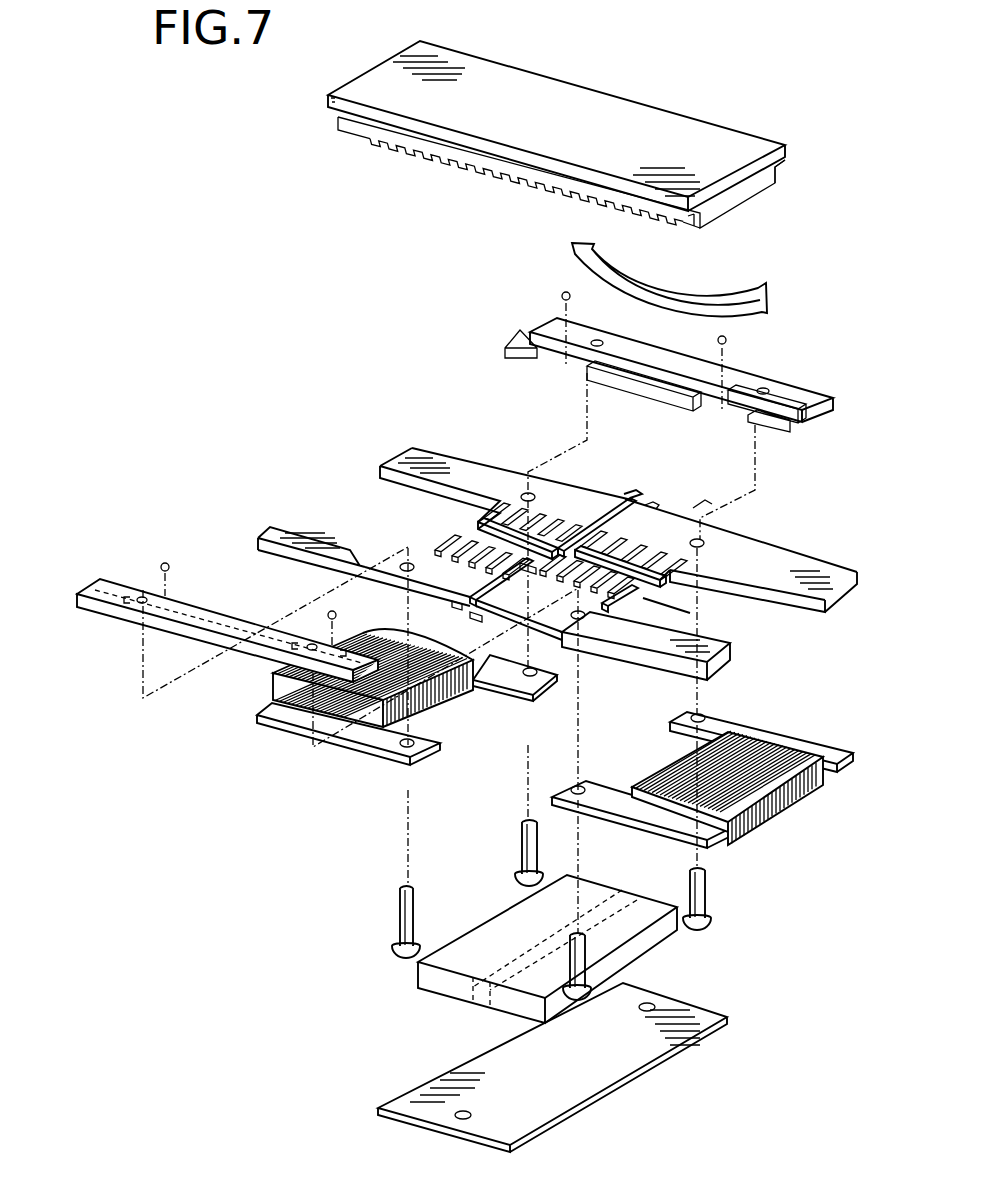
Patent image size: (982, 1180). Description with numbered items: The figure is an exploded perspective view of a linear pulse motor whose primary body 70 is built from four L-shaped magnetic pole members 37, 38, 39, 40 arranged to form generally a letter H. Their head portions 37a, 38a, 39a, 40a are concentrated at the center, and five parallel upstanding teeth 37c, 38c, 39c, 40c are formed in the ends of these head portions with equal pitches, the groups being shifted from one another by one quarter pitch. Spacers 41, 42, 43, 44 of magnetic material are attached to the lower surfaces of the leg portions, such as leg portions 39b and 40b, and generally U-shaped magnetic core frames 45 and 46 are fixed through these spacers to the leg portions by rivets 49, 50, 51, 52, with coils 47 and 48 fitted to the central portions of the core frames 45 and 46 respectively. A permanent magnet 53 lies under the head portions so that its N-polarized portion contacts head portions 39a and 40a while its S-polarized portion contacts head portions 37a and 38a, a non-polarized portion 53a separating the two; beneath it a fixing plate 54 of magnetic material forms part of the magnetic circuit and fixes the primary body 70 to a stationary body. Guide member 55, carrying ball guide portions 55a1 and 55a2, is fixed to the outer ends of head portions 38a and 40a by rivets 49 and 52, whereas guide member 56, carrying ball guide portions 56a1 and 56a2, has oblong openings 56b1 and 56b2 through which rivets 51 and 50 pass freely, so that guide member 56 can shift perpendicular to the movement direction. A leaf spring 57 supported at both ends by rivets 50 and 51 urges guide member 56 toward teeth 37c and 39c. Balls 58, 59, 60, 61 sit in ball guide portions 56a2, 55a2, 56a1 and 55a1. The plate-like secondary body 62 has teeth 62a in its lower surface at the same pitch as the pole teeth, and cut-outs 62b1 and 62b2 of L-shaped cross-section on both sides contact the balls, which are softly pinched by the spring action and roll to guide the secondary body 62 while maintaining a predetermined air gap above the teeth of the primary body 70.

The magnetic pole member 37 is at (745, 553).
The head portion 37a is at (660, 530).
The teeth 37c is at (660, 586).
The magnetic pole member 38 is at (603, 623).
The head portion 38a is at (530, 578).
The teeth 38c is at (630, 613).
The magnetic pole member 39 is at (513, 488).
The head portion 39a is at (580, 508).
The leg portion 39b is at (436, 470).
The teeth 39c is at (543, 530).
The magnetic pole member 40 is at (417, 584).
The head portion 40a is at (417, 557).
The leg portion 40b is at (310, 540).
The teeth 40c is at (450, 531).
The spacer 41 is at (810, 601).
The spacer 42 is at (735, 663).
The spacer 43 is at (386, 483).
The spacer 44 is at (272, 558).
The magnetic core frame 45 is at (800, 747).
The magnetic core frame 46 is at (297, 710).
The coil 47 is at (770, 803).
The coil 48 is at (430, 703).
The rivet 49 is at (587, 957).
The rivet 50 is at (706, 890).
The rivet 51 is at (527, 847).
The rivet 52 is at (407, 907).
The permanent magnet 53 is at (457, 983).
The non-polarized portion 53a is at (480, 998).
The fixing plate 54 is at (593, 1072).
The guide member 55 is at (132, 613).
The ball guide portion 55a1 is at (175, 597).
The ball guide portion 55a2 is at (300, 663).
The guide member 56 is at (663, 372).
The ball guide portion 56a1 is at (583, 368).
The ball guide portion 56a2 is at (742, 408).
The oblong opening 56b1 is at (597, 340).
The oblong opening 56b2 is at (766, 388).
The leaf spring 57 is at (590, 267).
The ball 58 is at (727, 340).
The ball 59 is at (337, 615).
The ball 60 is at (561, 296).
The ball 61 is at (164, 562).
The secondary body 62 is at (588, 121).
The teeth 62a is at (502, 176).
The cut-out 62b1 is at (693, 218).
The cut-out 62b2 is at (779, 174).
The primary body 70 is at (322, 332).